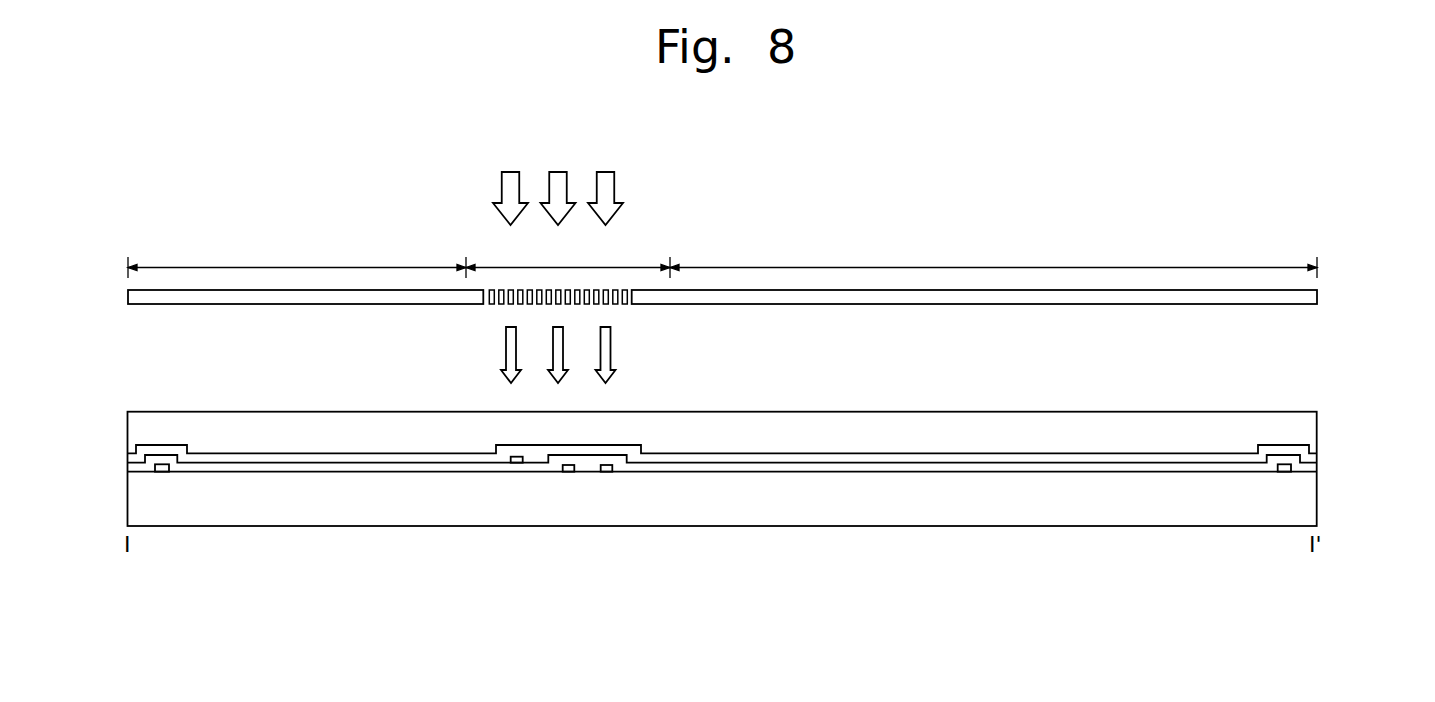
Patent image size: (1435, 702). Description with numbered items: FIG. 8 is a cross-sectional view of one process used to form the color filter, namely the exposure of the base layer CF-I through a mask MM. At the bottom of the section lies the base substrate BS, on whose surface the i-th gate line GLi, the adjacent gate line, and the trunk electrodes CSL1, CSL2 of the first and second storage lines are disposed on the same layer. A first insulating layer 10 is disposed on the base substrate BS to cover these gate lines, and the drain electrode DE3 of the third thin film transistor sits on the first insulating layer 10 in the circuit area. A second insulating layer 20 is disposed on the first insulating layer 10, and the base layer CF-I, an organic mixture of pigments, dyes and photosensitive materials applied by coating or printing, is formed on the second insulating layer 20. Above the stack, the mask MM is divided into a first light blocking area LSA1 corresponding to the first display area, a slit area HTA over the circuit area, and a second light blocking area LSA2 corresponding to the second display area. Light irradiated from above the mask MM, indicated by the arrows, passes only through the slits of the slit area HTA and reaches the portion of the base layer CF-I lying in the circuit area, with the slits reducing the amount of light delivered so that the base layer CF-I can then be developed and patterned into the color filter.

The mask MM is at (1317, 297).
The first light blocking area LSA1 is at (297, 260).
The slit area HTA is at (568, 260).
The second light blocking area LSA2 is at (993, 260).
The base layer CF-I is at (1312, 424).
The second insulating layer 20 is at (1315, 457).
The first insulating layer 10 is at (1317, 470).
The base substrate BS is at (1312, 506).
The trunk electrode CSL1 is at (162, 472).
The trunk electrode CSL2 is at (1285, 472).
The drain electrode DE3 is at (516, 463).
The i-th gate line GLi is at (568, 472).